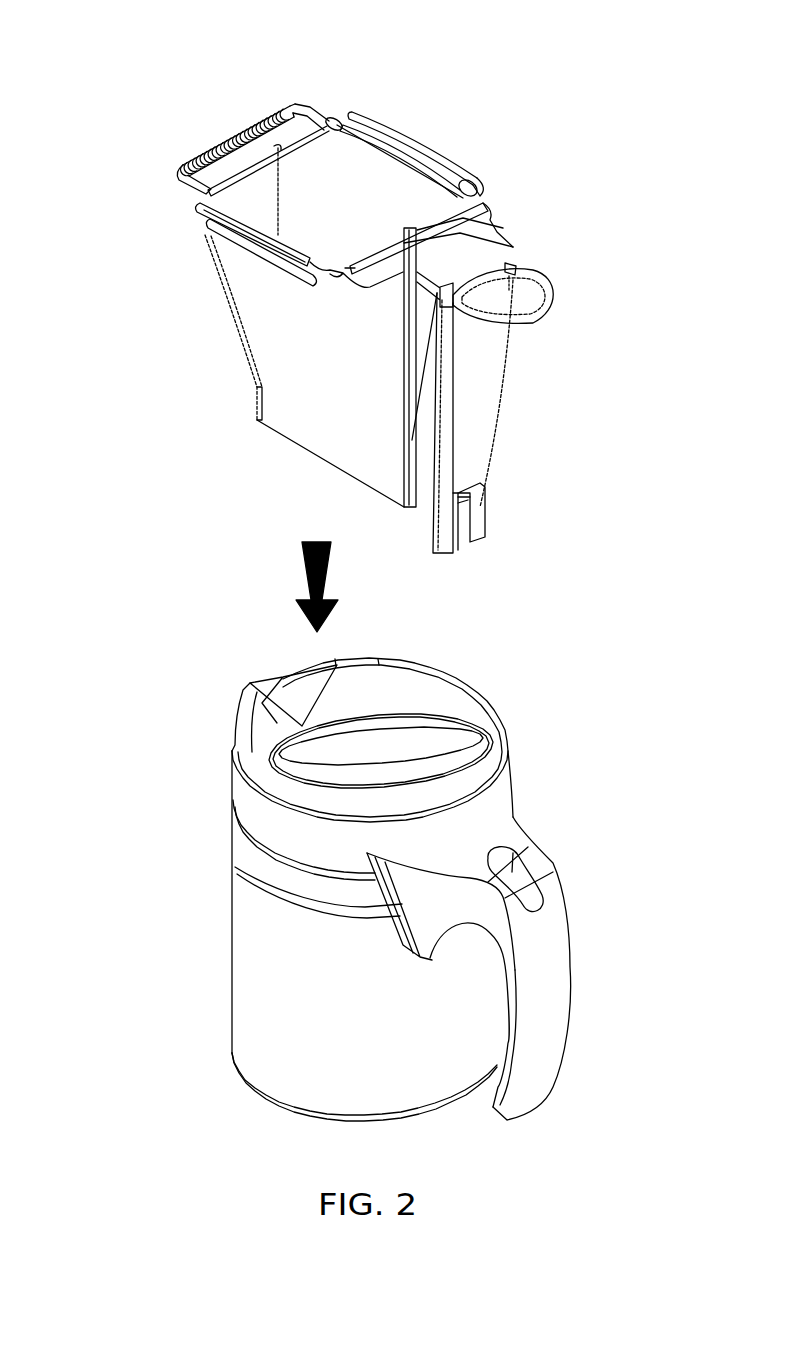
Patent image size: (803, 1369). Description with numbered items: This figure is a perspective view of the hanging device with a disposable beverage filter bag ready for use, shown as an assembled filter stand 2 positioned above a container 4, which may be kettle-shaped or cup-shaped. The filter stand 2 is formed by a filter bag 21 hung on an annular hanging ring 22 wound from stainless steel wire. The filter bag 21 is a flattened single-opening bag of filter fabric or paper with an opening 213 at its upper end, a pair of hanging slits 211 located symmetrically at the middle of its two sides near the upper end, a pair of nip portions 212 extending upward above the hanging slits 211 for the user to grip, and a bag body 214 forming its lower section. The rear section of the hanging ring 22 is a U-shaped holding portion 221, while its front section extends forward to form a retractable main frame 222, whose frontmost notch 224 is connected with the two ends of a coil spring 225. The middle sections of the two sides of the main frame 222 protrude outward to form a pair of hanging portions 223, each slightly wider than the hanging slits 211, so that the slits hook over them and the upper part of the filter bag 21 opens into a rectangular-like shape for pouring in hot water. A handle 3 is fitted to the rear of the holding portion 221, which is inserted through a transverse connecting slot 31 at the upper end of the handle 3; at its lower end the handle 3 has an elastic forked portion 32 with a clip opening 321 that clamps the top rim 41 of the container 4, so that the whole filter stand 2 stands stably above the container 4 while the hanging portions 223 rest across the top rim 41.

The filter stand 2 is at (198, 323).
The filter bag 21 is at (320, 460).
The hanging slits 211 is at (253, 242).
The nip portions 212 is at (247, 220).
The opening 213 is at (308, 147).
The bag body 214 is at (307, 337).
The hanging ring 22 is at (495, 193).
The holding portion 221 is at (530, 270).
The main frame 222 is at (335, 120).
The hanging portions 223 is at (213, 237).
The notch 224 is at (300, 93).
The coil spring 225 is at (228, 138).
The handle 3 is at (493, 390).
The connecting slot 31 is at (508, 267).
The forked portion 32 is at (480, 507).
The clip opening 321 is at (460, 537).
The container 4 is at (282, 1072).
The top rim 41 is at (252, 777).